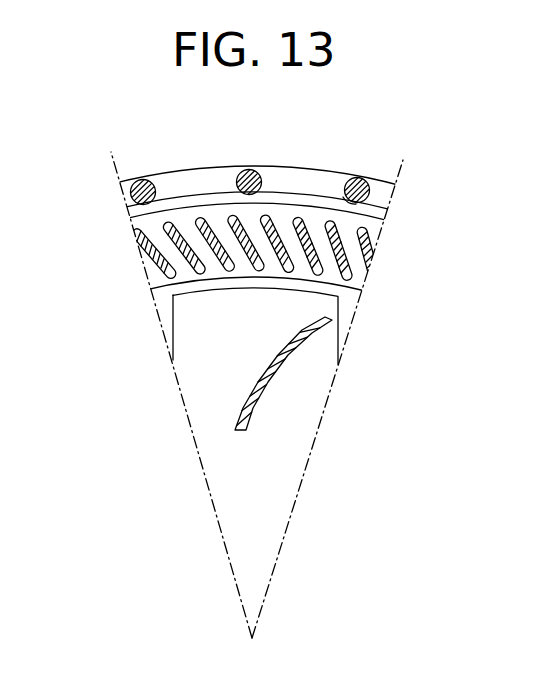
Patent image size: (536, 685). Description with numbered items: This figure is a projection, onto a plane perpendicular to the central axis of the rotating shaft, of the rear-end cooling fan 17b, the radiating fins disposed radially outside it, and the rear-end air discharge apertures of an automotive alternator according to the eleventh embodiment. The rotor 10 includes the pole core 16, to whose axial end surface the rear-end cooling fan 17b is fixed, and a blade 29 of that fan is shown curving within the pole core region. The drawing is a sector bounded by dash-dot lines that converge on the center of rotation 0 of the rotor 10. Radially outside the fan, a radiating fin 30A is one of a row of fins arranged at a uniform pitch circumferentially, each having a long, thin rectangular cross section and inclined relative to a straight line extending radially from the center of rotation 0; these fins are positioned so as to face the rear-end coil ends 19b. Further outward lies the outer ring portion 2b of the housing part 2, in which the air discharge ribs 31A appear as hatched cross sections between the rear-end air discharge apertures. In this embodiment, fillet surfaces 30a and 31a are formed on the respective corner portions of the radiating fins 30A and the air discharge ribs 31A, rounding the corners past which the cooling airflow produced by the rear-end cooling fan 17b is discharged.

The center axis O 0 is at (256, 637).
The stator core 2 is at (105, 184).
The outer ring portion 2b is at (178, 185).
The air discharge rib 31A is at (372, 168).
The fillet surface 31a is at (336, 199).
The rear-end coil end 19b is at (153, 222).
The radiating fin 30A is at (378, 244).
The fillet surface 30a is at (350, 272).
The rotor 10 is at (163, 319).
The pole core 16 is at (187, 353).
The blade 29 is at (288, 353).
The rear-end cooling fan 17b is at (268, 393).